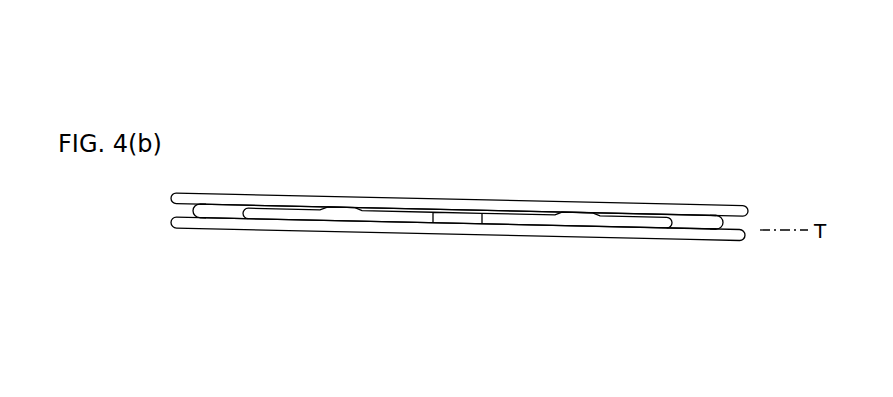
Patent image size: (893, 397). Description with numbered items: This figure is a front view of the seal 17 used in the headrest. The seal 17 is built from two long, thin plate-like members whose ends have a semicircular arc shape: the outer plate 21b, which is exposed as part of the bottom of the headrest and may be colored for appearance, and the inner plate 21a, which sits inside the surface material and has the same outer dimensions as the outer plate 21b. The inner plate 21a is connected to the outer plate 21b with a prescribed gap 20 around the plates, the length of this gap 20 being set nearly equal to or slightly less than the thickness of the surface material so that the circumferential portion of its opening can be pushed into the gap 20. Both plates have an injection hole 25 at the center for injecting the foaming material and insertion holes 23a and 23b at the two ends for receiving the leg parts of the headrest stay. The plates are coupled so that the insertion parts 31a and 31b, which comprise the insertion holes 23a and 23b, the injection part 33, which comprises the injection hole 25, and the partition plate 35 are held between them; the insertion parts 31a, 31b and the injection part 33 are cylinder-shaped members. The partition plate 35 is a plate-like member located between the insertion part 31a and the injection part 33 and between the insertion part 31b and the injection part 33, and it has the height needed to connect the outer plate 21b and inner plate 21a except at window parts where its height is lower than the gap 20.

The seal 17 is at (624, 160).
The prescribed gap 20 is at (737, 226).
The inner plate 21a is at (517, 200).
The outer plate 21b is at (390, 235).
The insertion hole 23a is at (698, 204).
The insertion hole 23b is at (218, 195).
The injection hole 25 is at (457, 199).
The insertion part 31a is at (702, 218).
The insertion part 31b is at (200, 212).
The injection part 33 is at (472, 218).
The partition plate 35 is at (281, 210).